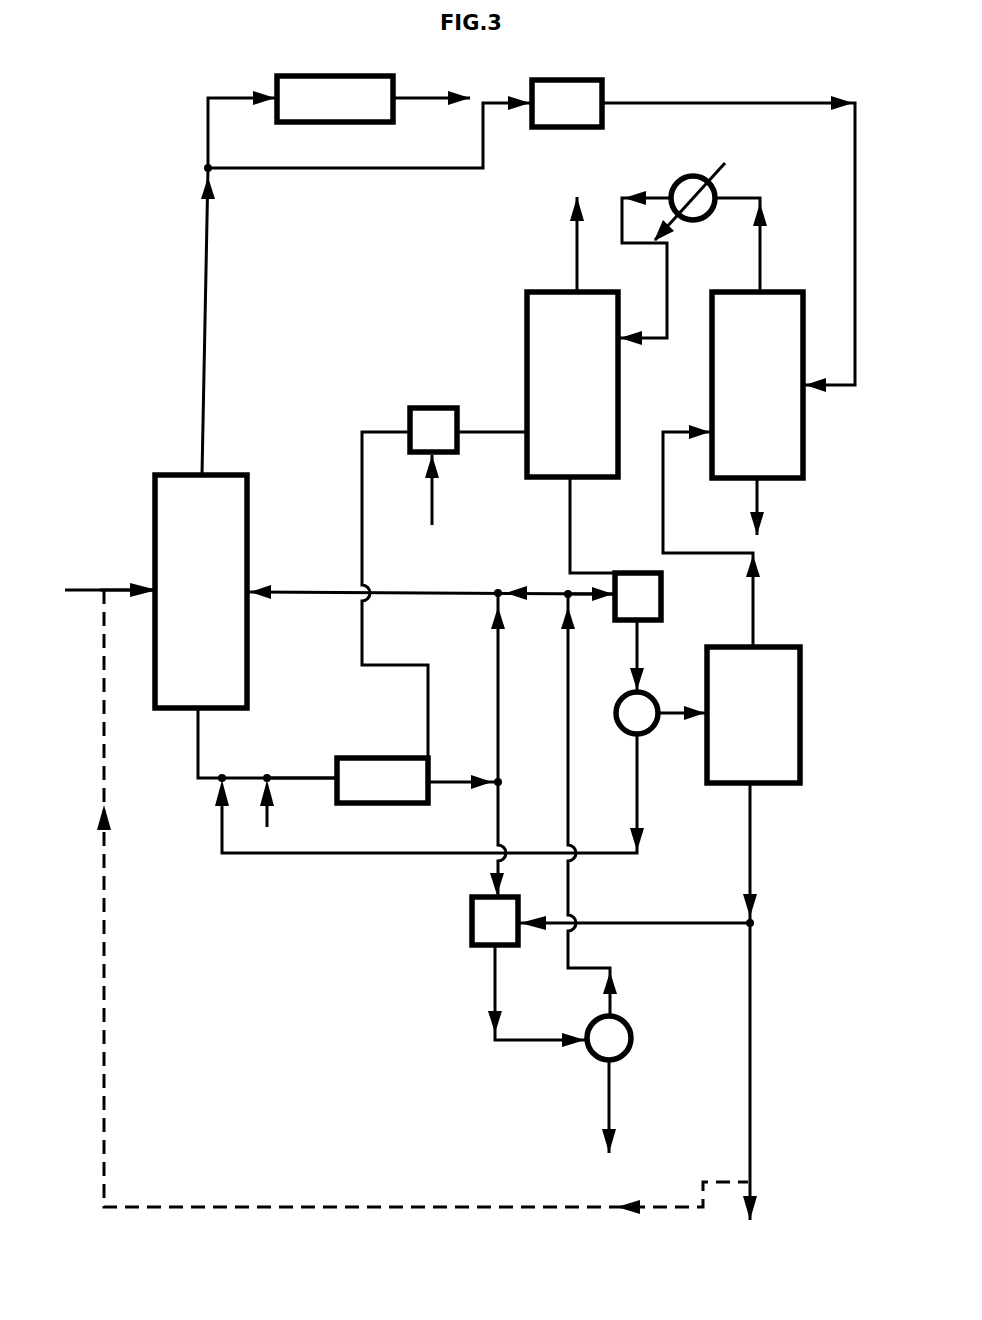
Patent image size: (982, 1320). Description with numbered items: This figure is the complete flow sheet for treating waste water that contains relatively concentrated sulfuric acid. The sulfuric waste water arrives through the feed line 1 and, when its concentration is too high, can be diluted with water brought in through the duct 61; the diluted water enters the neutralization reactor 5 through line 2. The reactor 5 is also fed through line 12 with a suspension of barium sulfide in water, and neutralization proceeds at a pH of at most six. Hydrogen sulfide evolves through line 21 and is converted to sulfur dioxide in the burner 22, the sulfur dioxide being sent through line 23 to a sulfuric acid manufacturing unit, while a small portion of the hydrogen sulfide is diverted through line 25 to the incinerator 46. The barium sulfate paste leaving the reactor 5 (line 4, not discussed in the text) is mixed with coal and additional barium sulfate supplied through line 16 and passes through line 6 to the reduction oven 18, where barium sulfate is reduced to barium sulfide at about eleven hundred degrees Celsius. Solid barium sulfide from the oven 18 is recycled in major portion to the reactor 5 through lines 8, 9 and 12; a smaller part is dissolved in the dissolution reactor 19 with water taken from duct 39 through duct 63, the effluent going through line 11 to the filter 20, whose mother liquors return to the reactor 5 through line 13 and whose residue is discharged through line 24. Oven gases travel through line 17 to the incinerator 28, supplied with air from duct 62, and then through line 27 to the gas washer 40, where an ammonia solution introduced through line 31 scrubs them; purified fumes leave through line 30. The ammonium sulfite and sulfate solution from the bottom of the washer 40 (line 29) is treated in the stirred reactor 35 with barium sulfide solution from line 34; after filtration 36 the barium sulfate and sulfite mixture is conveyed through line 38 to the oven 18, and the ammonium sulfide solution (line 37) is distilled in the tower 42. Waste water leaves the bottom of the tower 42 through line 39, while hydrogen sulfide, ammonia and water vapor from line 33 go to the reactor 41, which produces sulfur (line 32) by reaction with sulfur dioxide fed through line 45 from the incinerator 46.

The feed line 1 is at (80, 587).
The line 2 is at (126, 585).
The bottoms line 4 is at (195, 752).
The neutralization reactor 5 is at (155, 505).
The line 6 is at (310, 778).
The line 8 is at (462, 780).
The line 9 is at (496, 685).
The line 11 is at (492, 995).
The line 12 is at (318, 590).
The line 13 is at (566, 685).
The line 16 is at (270, 817).
The line 17 is at (362, 493).
The reduction oven 18 is at (383, 757).
The dissolution reactor 19 is at (471, 904).
The filter 20 is at (635, 1035).
The line 21 is at (205, 303).
The burner 22 is at (328, 76).
The line 23 is at (428, 98).
The line 24 is at (612, 1103).
The line 25 is at (386, 170).
The line 27 is at (493, 435).
The incinerator 28 is at (437, 406).
The line 29 is at (568, 540).
The line 30 is at (572, 229).
The line 31 is at (650, 195).
The line 32 is at (765, 510).
The line 33 is at (760, 592).
The line 34 is at (600, 600).
The stirred reactor 35 is at (663, 592).
The filtration 36 is at (623, 735).
The line 37 is at (673, 708).
The line 38 is at (642, 815).
The line 39 is at (753, 858).
The gas washer 40 is at (527, 332).
The reactor 41 is at (712, 378).
The tower 42 is at (770, 785).
The line 45 is at (698, 103).
The incinerator 46 is at (567, 80).
The duct 61 is at (106, 945).
The duct 62 is at (430, 493).
The duct 63 is at (655, 920).